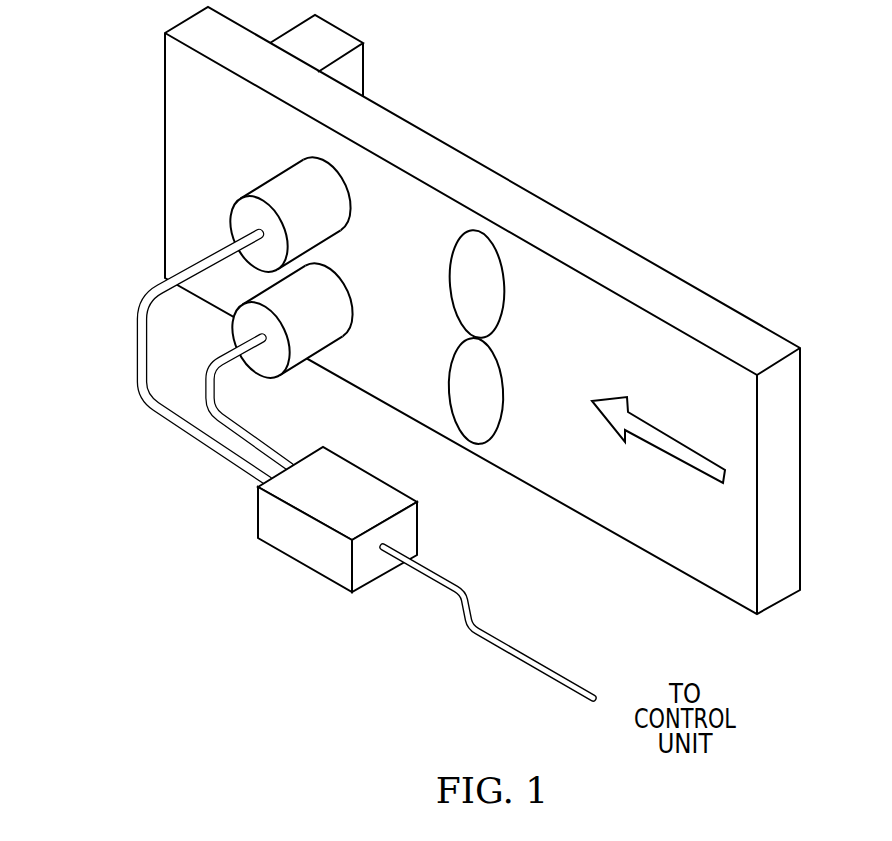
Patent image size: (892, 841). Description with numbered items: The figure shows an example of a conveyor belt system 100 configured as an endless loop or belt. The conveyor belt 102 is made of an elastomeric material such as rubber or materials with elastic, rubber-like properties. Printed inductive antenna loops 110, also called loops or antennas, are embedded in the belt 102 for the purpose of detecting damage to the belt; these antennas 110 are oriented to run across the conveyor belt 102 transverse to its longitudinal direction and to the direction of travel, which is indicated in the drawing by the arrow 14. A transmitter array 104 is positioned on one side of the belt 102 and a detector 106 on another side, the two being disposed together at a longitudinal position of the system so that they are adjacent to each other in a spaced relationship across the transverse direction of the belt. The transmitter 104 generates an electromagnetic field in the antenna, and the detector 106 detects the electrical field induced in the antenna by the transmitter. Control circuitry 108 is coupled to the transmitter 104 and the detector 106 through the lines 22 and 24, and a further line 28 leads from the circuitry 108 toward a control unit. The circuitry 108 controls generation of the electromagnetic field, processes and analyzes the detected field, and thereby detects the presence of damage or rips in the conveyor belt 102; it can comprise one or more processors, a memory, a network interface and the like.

The conveyor belt system 100 is at (614, 76).
The conveyor belt 102 is at (505, 178).
The transmitter array 104 is at (238, 202).
The detector 106 is at (364, 70).
The control circuitry 108 is at (305, 560).
The printed inductive antenna loops 110 is at (450, 276).
The direction arrow 14 is at (676, 442).
The first sensor cable 22 is at (136, 354).
The second sensor cable 24 is at (218, 398).
The control unit cable 28 is at (464, 626).